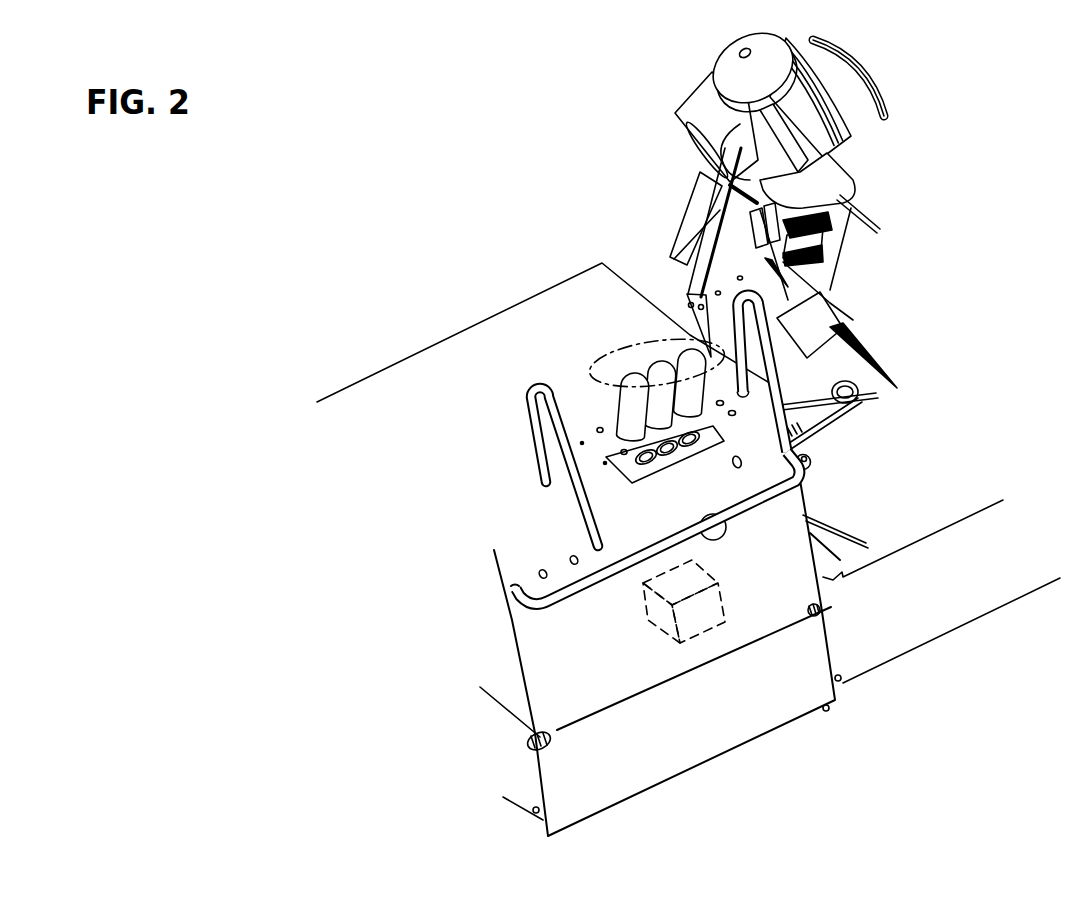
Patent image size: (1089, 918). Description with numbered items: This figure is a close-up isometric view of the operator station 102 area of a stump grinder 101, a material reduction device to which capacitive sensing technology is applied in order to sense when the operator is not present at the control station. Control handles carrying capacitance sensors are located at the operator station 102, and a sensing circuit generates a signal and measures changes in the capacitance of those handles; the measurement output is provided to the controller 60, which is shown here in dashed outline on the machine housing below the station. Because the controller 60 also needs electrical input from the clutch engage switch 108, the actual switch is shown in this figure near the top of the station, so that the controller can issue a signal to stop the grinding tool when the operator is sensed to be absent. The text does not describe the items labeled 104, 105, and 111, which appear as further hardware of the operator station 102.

The stump grinder 101 is at (378, 160).
The operator station 102 is at (622, 347).
The hose 104 is at (737, 413).
The cable 105 is at (733, 400).
The clutch engage switch 108 is at (775, 510).
The hooks 111 is at (695, 295).
The controller 60 is at (701, 633).